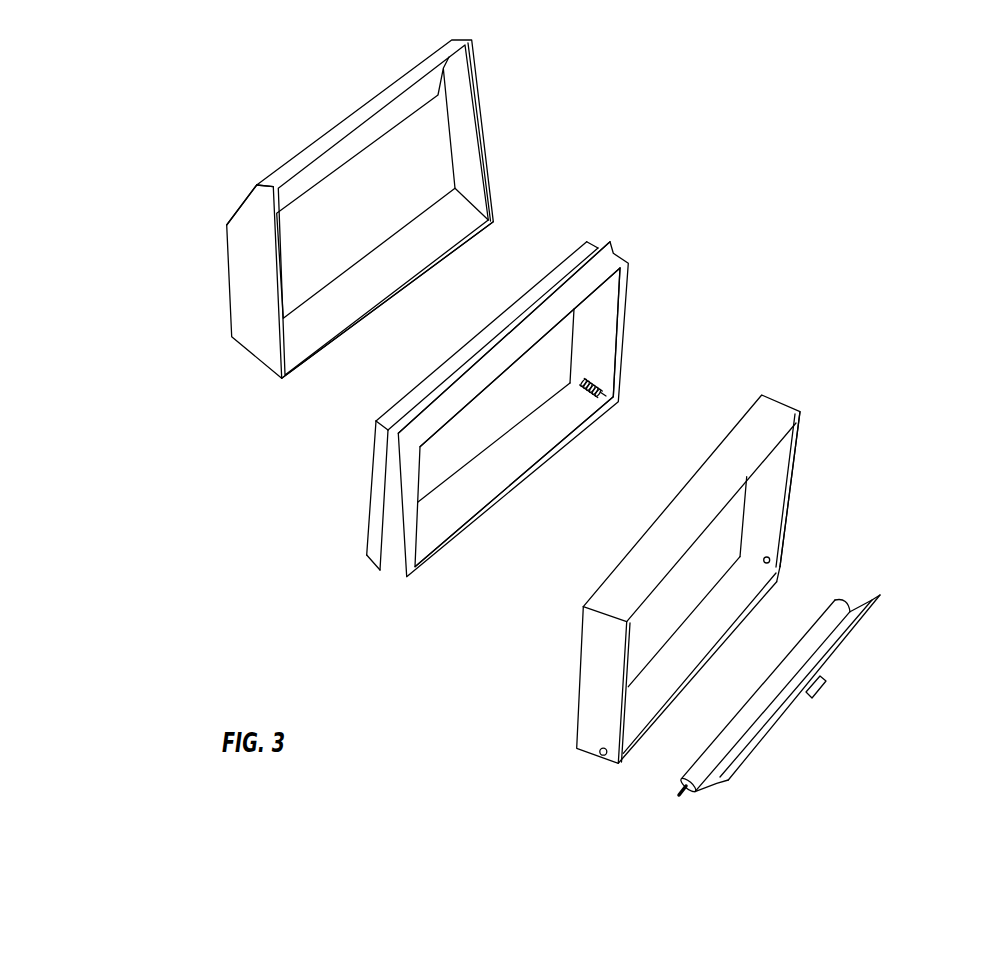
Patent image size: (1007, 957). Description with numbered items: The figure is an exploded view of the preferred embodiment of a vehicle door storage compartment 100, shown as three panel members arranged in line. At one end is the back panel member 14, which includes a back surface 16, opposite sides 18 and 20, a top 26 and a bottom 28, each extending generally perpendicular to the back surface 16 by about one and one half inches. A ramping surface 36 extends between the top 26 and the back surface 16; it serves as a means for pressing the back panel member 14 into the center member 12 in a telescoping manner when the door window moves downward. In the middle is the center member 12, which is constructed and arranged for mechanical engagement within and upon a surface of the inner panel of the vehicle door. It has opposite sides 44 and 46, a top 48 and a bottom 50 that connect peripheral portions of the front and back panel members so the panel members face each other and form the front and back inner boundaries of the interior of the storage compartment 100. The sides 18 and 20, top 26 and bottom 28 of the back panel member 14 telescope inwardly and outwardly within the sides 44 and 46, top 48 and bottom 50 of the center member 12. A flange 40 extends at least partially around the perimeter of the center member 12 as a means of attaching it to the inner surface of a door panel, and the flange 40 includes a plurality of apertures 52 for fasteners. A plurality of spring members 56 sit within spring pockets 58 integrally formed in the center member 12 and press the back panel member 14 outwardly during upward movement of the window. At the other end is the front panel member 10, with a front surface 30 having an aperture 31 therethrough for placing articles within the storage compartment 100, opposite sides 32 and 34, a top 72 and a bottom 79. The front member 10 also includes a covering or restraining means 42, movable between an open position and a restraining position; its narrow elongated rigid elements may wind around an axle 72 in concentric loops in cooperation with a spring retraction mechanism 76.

The storage compartment 100 is at (770, 224).
The front panel member 10 is at (778, 407).
The center member 12 is at (607, 260).
The back panel member 14 is at (482, 130).
The back surface 16 is at (417, 188).
The side 18 is at (467, 91).
The side 20 is at (251, 277).
The top 26 is at (272, 176).
The bottom 28 is at (333, 316).
The front surface 30 is at (773, 582).
The aperture 31 is at (613, 767).
The side 32 is at (790, 500).
The side 34 is at (597, 672).
The ramping surface 36 is at (238, 212).
The flange 40 is at (611, 240).
The covering or restraining means 42 is at (850, 600).
The side 44 is at (602, 332).
The side 46 is at (393, 533).
The top 48 is at (453, 365).
The bottom 50 is at (485, 500).
The apertures 52 is at (588, 243).
The spring members 56 is at (605, 389).
The spring pockets 58 is at (597, 397).
The top 72 is at (620, 582).
The spring retraction mechanism 76 is at (682, 793).
The bottom 79 is at (698, 634).